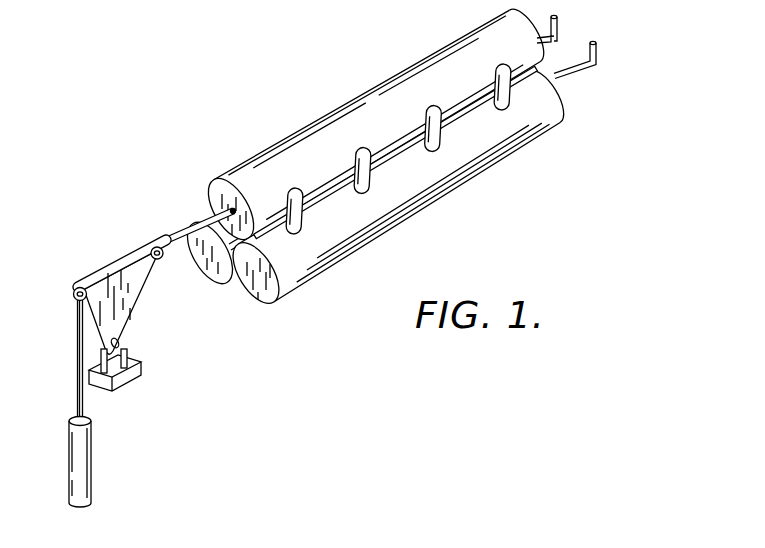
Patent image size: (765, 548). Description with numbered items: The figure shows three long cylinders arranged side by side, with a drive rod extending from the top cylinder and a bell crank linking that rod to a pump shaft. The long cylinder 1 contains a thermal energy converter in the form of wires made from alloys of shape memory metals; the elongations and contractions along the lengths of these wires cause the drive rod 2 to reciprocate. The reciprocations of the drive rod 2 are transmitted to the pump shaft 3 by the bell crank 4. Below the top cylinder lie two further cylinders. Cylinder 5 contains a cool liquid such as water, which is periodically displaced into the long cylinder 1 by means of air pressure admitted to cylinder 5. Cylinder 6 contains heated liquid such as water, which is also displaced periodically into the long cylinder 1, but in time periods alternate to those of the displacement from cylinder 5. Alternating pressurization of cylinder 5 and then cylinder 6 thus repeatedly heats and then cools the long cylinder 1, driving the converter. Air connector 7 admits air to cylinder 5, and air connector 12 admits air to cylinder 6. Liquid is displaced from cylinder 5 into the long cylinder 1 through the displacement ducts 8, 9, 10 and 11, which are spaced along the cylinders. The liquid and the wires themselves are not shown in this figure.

The long cylinder 1 is at (229, 158).
The drive rod 2 is at (169, 227).
The pump shaft 3 is at (78, 386).
The bell crank 4 is at (128, 294).
The cylinder 5 is at (272, 285).
The cylinder 6 is at (205, 274).
The air connector 7 is at (591, 42).
The displacement duct 8 is at (295, 211).
The displacement duct 9 is at (363, 169).
The displacement duct 10 is at (434, 126).
The displacement duct 11 is at (502, 88).
The air connector 12 is at (551, 9).